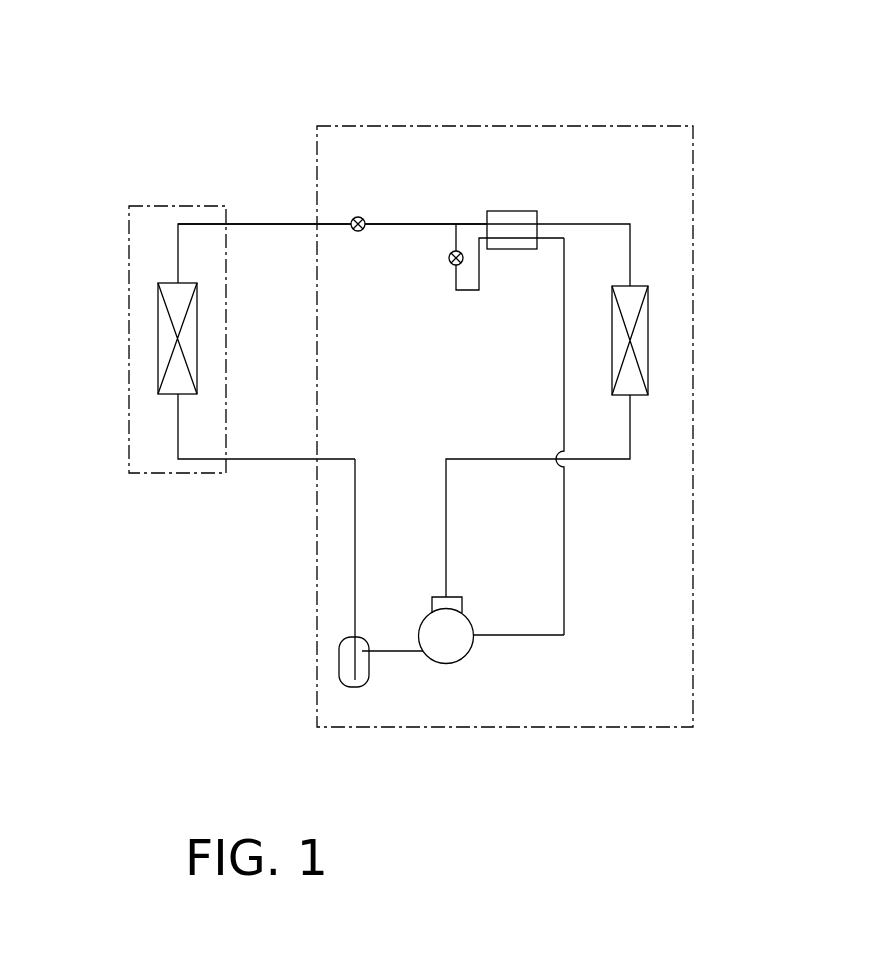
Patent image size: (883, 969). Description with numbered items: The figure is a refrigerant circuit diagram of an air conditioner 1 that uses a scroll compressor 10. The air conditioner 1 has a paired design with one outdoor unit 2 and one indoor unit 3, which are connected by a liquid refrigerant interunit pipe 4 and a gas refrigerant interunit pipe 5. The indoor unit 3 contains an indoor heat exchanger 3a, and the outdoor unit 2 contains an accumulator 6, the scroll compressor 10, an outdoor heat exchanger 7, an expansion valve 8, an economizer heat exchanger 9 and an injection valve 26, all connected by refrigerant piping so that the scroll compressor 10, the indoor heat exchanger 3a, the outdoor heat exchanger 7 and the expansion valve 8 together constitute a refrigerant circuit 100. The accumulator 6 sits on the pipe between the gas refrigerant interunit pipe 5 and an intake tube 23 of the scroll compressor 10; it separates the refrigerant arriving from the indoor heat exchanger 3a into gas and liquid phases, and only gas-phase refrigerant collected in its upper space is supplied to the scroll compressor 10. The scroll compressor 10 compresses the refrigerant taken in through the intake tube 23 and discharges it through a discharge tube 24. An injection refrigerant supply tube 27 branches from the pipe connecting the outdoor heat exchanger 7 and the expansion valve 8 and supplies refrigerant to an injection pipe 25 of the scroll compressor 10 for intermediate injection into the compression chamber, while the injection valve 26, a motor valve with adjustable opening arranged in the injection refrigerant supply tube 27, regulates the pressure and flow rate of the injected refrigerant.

The air conditioner 1 is at (765, 83).
The outdoor unit 2 is at (640, 119).
The indoor unit 3 is at (188, 201).
The indoor heat exchanger 3a is at (158, 345).
The liquid refrigerant interunit pipe 4 is at (275, 224).
The gas refrigerant interunit pipe 5 is at (275, 459).
The accumulator 6 is at (386, 650).
The outdoor heat exchanger 7 is at (649, 340).
The expansion valve 8 is at (360, 216).
The economizer heat exchanger 9 is at (513, 211).
The scroll compressor 10 is at (465, 661).
The intake tube 23 is at (356, 517).
The discharge tube 24 is at (447, 520).
The injection pipe 25 is at (500, 634).
The injection valve 26 is at (448, 263).
The injection refrigerant supply tube 27 is at (565, 355).
The refrigerant circuit 100 is at (640, 259).